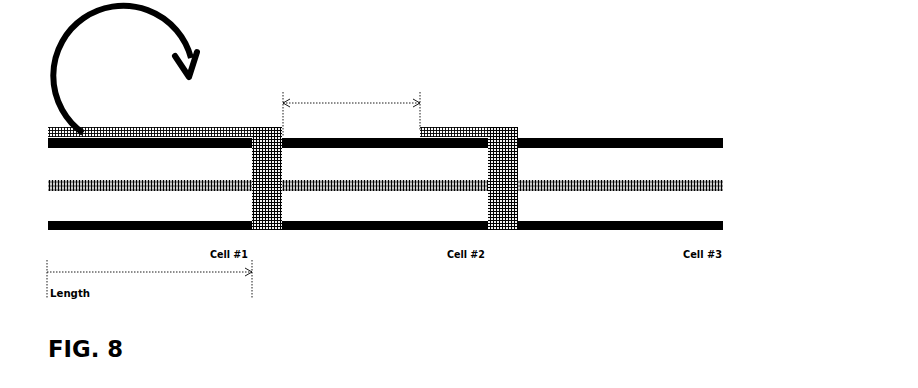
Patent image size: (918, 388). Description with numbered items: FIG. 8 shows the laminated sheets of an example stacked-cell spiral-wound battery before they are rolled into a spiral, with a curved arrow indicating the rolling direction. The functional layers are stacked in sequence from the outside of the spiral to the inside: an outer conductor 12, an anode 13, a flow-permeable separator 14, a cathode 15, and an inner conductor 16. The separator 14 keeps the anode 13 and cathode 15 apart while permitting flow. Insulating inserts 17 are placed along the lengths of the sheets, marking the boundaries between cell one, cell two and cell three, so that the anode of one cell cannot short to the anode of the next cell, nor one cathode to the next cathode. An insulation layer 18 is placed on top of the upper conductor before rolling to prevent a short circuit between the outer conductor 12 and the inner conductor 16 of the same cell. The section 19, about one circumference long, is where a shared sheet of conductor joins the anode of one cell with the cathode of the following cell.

The outer conductor 12 is at (718, 223).
The anode 13 is at (717, 198).
The flow-permeable separator 14 is at (720, 182).
The cathode 15 is at (717, 160).
The inner conductor 16 is at (723, 138).
The insulating inserts 17 is at (257, 231).
The insulating tab layer 18 is at (185, 128).
The ~1-circumference section 19 is at (318, 138).